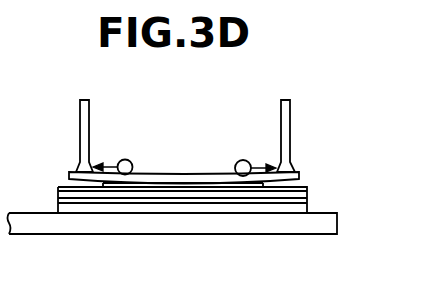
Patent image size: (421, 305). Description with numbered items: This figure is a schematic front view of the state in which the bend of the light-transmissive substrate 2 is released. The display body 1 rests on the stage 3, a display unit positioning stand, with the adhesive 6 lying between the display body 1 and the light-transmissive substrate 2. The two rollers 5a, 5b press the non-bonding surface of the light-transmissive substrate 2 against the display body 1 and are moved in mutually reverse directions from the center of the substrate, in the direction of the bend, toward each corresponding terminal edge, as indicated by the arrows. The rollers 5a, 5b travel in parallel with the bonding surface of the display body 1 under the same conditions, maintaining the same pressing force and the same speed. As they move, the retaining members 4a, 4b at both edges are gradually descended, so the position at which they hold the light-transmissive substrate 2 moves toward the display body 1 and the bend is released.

The display body 1 is at (309, 192).
The light-transmissive substrate 2 is at (185, 172).
The stage 3 is at (270, 231).
The retaining member 4a is at (79, 107).
The retaining member 4b is at (291, 107).
The roller 5a is at (127, 159).
The roller 5b is at (244, 160).
The adhesive 6 is at (183, 187).